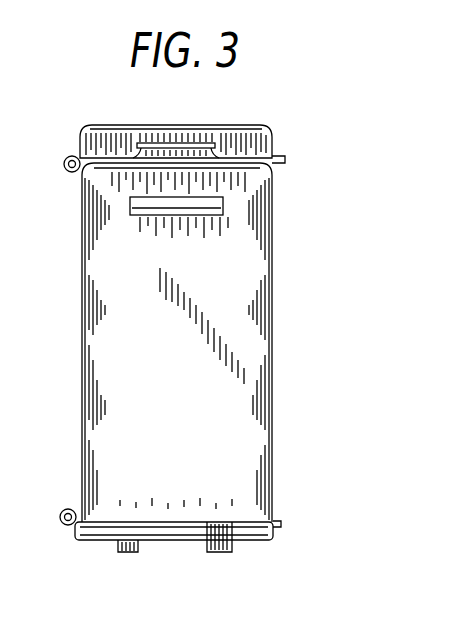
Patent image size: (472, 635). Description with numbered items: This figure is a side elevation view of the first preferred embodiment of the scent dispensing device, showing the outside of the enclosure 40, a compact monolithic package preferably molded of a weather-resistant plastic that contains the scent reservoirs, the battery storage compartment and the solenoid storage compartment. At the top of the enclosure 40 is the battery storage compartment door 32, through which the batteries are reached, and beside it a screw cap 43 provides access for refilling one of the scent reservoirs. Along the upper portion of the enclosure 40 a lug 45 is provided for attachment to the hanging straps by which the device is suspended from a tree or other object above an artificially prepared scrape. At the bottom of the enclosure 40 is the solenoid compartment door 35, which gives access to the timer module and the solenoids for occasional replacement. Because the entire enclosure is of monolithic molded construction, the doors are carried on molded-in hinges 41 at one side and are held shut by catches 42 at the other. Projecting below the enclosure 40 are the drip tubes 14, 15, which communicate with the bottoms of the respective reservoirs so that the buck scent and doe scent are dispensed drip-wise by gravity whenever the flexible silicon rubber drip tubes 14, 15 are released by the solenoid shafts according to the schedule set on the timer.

The drip tube 14 is at (116, 552).
The drip tube 15 is at (231, 553).
The battery storage compartment door 32 is at (249, 126).
The solenoid compartment door 35 is at (172, 542).
The enclosure 40 is at (263, 320).
The molded-in hinges 41 is at (66, 157).
The catches 42 is at (285, 158).
The screw cap 43 is at (185, 126).
The lugs 45 is at (143, 220).